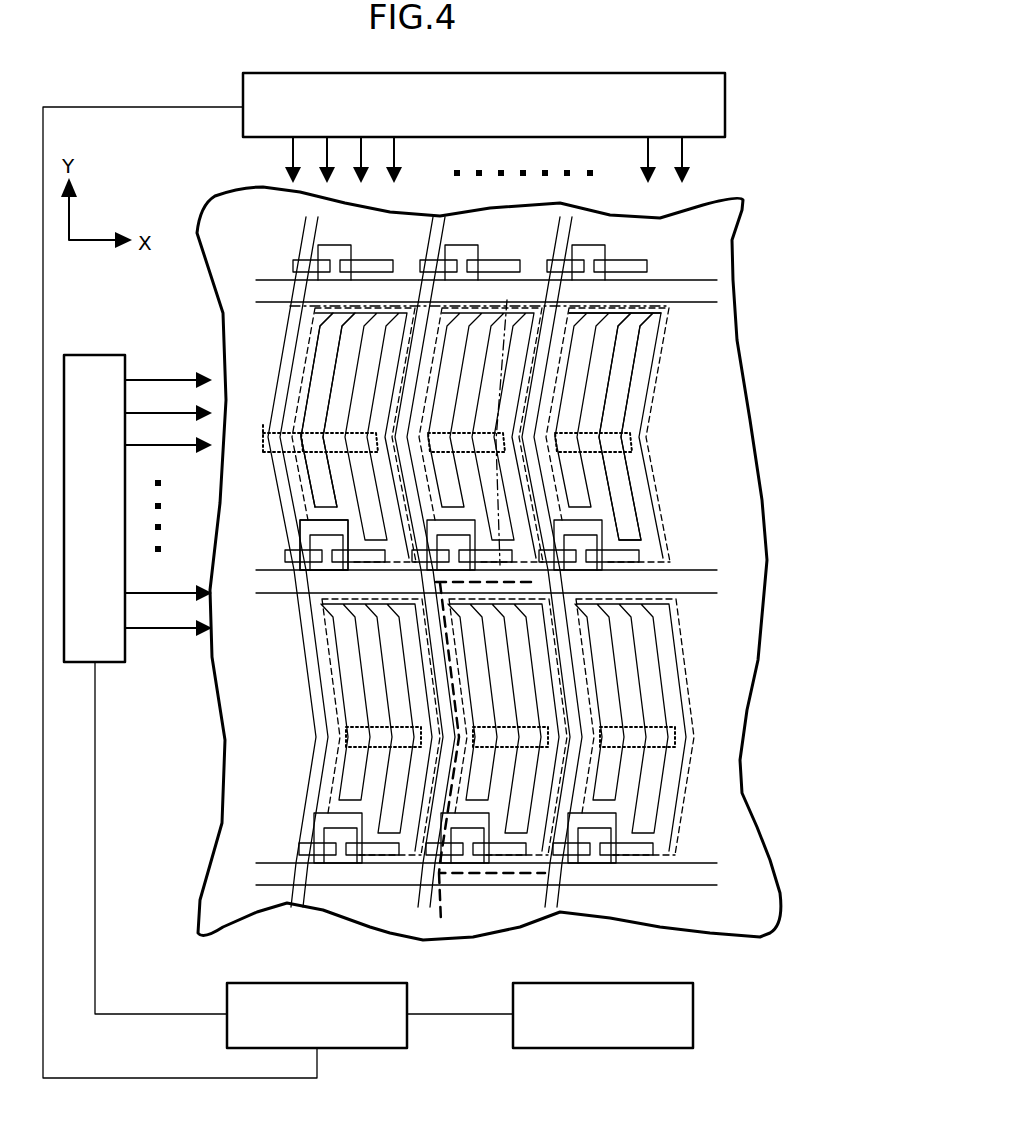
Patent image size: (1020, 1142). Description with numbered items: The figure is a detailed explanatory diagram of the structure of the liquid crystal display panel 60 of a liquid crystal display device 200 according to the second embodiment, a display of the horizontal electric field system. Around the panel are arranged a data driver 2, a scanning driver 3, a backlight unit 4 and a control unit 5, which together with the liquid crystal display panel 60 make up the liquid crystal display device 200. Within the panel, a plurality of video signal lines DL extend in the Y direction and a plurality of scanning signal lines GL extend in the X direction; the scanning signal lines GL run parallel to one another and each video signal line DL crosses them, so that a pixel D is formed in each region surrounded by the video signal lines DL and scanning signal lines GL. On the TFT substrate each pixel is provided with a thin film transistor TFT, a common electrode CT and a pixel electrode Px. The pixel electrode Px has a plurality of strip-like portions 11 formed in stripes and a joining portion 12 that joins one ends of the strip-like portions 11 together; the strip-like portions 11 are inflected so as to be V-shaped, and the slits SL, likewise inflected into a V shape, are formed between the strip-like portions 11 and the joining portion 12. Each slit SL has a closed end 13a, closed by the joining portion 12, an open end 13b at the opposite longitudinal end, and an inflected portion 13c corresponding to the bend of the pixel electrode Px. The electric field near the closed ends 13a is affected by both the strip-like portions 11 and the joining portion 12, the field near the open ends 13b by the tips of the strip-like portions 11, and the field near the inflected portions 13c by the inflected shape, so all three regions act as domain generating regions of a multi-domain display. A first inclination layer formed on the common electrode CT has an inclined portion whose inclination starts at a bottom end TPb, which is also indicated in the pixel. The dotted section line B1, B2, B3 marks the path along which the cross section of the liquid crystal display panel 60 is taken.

The liquid crystal display device 200 is at (193, 85).
The data driver 2 is at (243, 117).
The scanning driver 3 is at (83, 353).
The backlight unit 4 is at (693, 1012).
The control unit 5 is at (350, 983).
The liquid crystal display panel 60 is at (650, 217).
The strip-like portions 11 is at (392, 332).
The joining portion 12 is at (328, 514).
The closed end 13a is at (618, 530).
The open end 13b is at (598, 312).
The inflected portion 13c is at (612, 450).
The scanning signal lines GL is at (270, 292).
The video signal lines DL is at (302, 893).
The slits SL is at (360, 387).
The bottom end of inclined portion TPb is at (301, 425).
The pixel electrode Px is at (337, 448).
The common electrode CT is at (330, 515).
The thin film transistor TFT is at (328, 563).
The line B1 is at (480, 294).
The line B2 is at (479, 432).
The line B3 is at (484, 575).
The pixel D is at (490, 762).